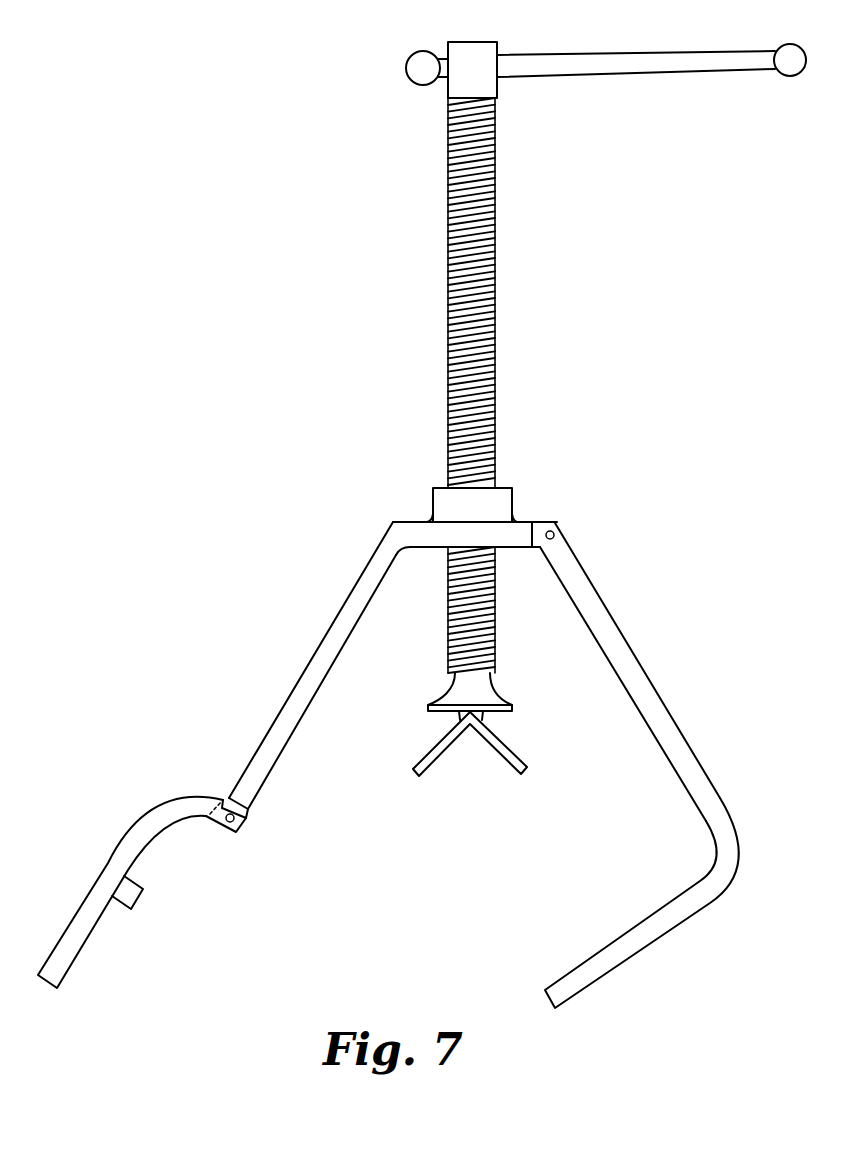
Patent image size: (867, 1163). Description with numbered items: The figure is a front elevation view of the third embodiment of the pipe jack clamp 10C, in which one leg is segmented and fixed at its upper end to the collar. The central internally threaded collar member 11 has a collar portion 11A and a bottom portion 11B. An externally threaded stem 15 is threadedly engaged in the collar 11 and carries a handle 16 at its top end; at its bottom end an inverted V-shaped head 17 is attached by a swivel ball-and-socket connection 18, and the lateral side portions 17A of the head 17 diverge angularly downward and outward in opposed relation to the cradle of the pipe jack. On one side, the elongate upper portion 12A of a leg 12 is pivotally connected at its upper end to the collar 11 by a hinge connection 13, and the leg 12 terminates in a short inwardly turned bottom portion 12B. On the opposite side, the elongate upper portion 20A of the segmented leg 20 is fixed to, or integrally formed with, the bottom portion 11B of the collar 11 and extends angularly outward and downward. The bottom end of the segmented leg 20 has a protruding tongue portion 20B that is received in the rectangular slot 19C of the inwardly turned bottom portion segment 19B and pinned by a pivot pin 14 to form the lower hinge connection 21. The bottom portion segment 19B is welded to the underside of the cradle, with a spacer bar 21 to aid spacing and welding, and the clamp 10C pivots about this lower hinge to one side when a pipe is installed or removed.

The pipe jack clamp 10C is at (272, 492).
The collar member 11 is at (493, 511).
The collar portion 11A is at (432, 520).
The bottom portion of the collar 11B is at (542, 522).
The leg member 12 is at (639, 765).
The elongate upper portion 12A is at (605, 605).
The inwardly turned bottom portion 12B is at (650, 938).
The hinge connection 13 is at (558, 533).
The pivot pin 14 is at (243, 822).
The externally threaded stem 15 is at (497, 258).
The handle 16 is at (613, 50).
The inverted V-shaped head 17 is at (486, 753).
The lateral side portions 17A is at (505, 762).
The ball-and-socket connection 18 is at (490, 688).
The inwardly turned bottom portion segment 19B is at (105, 865).
The rectangular slot 19C is at (214, 824).
The segmented leg 20 is at (296, 671).
The elongate upper portion 20A is at (342, 607).
The protruding tongue portion 20B is at (252, 806).
The hinge connection 21 is at (133, 897).